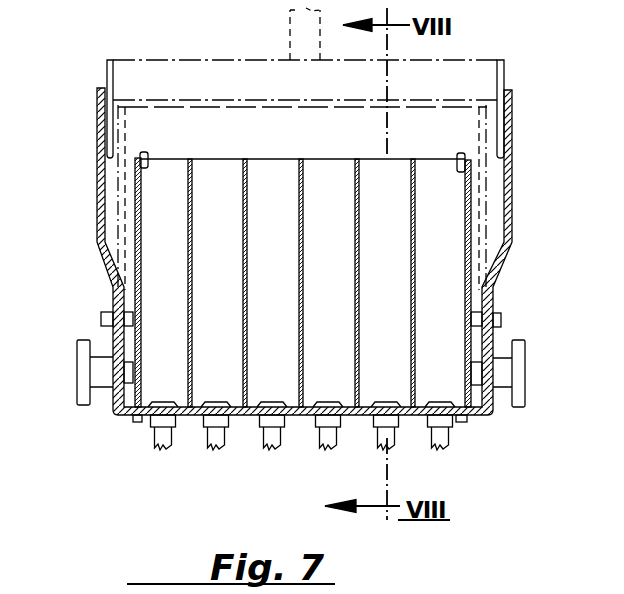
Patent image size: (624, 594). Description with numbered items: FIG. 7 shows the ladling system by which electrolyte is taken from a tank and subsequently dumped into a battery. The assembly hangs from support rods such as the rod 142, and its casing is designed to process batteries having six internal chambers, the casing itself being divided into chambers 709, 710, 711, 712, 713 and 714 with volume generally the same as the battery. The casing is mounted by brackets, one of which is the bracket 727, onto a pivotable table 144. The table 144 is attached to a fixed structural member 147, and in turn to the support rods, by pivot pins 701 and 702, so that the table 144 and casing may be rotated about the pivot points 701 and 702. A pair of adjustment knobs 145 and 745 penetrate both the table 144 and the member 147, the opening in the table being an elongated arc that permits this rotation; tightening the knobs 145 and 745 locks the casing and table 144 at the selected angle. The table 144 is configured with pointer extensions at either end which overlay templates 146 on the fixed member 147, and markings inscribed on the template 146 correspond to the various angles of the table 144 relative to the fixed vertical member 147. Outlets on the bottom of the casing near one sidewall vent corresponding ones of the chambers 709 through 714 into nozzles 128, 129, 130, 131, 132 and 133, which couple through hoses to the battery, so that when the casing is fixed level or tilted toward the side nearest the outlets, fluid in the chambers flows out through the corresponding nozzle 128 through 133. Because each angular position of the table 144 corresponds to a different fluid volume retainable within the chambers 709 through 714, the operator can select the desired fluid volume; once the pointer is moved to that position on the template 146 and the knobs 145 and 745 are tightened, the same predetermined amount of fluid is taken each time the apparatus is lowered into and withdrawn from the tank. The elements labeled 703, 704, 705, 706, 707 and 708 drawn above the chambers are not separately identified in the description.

The support rod 142 is at (290, 28).
The pivotable table 144 is at (97, 163).
The adjustment knob 145 is at (520, 357).
The template 146 is at (108, 76).
The fixed member 147 is at (116, 222).
The pivot pin 701 is at (501, 317).
The pivot pin 702 is at (100, 318).
The partition compartment 703 is at (141, 268).
The partition compartment 704 is at (192, 268).
The partition compartment 705 is at (247, 268).
The partition compartment 706 is at (303, 268).
The partition compartment 707 is at (359, 268).
The partition compartment 708 is at (415, 268).
The chamber 709 is at (148, 338).
The chamber 710 is at (201, 338).
The chamber 711 is at (257, 338).
The chamber 712 is at (313, 338).
The chamber 713 is at (371, 338).
The chamber 714 is at (425, 338).
The bracket 727 is at (148, 156).
The adjustment knob 745 is at (78, 352).
The nozzle 128 is at (160, 446).
The nozzle 129 is at (214, 446).
The nozzle 130 is at (272, 446).
The nozzle 131 is at (330, 446).
The nozzle 132 is at (392, 446).
The nozzle 133 is at (447, 446).